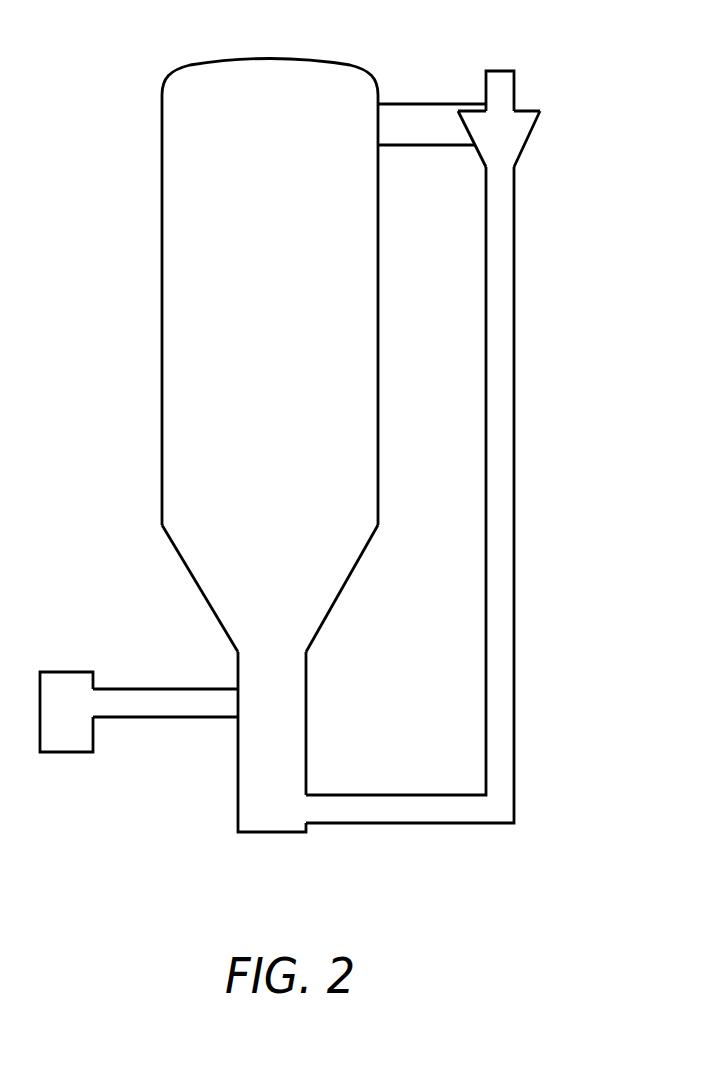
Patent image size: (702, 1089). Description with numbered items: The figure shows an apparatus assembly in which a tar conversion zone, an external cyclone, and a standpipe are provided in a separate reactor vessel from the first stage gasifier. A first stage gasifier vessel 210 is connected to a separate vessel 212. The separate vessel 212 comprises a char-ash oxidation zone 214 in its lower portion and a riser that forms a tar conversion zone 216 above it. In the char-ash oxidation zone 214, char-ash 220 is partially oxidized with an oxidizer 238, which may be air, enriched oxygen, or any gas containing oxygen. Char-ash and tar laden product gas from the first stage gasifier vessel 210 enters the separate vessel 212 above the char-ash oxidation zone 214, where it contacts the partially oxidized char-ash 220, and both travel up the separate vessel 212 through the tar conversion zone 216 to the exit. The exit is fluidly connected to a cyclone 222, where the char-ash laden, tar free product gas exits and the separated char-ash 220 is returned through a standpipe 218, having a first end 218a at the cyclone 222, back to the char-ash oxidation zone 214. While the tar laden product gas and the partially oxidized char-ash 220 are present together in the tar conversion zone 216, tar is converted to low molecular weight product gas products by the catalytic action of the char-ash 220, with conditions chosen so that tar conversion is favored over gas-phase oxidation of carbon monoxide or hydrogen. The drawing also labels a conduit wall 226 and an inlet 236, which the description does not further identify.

The first stage gasifier vessel 210 is at (66, 733).
The separate vessel 212 is at (185, 508).
The char-ash oxidation zone 214 is at (292, 697).
The tar conversion zone 216 is at (208, 201).
The standpipe 218 is at (506, 648).
The first end of standpipe 218a is at (503, 250).
The char-ash 220 is at (292, 757).
The cyclone 222 is at (514, 137).
The inner conduit wall 226 is at (505, 390).
The inlet neck 236 is at (505, 70).
The oxidizer 238 is at (365, 118).